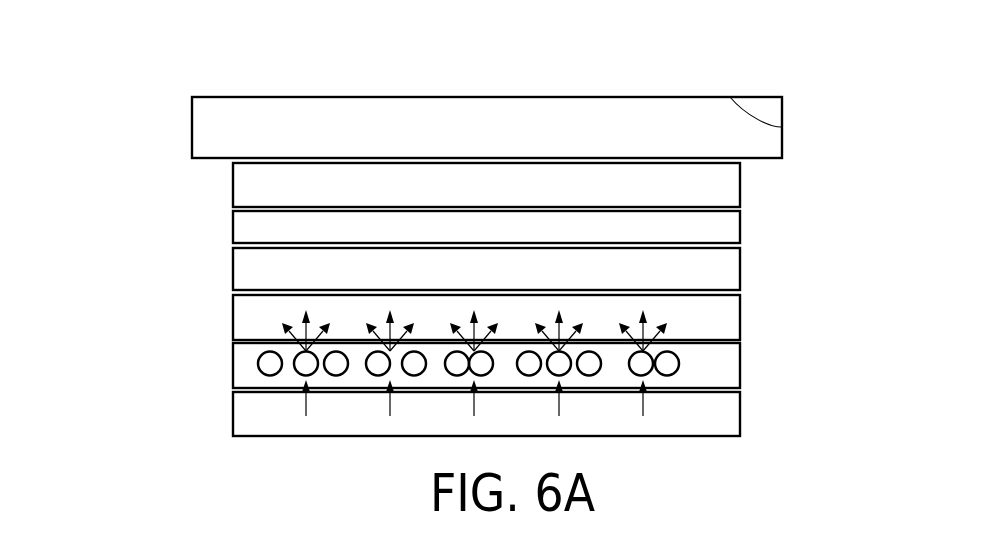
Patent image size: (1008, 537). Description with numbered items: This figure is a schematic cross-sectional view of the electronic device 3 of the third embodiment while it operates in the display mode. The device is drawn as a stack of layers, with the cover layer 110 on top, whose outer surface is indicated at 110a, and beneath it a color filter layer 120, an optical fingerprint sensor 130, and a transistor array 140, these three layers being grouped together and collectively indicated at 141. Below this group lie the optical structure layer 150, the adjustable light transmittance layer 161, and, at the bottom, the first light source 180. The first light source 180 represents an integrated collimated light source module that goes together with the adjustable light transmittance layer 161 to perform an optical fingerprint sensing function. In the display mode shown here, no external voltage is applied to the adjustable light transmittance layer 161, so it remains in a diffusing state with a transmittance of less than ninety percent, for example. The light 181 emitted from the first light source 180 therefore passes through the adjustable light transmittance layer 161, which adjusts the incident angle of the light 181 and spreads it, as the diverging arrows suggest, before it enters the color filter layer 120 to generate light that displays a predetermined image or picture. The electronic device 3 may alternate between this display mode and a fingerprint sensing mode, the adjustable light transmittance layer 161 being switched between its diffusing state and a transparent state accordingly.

The electronic device 3 is at (753, 43).
The cover layer 110 is at (207, 125).
The display surface 110a is at (783, 127).
The color filter layer 120 is at (250, 187).
The optical fingerprint sensor 130 is at (238, 220).
The transistor array 140 is at (252, 272).
The optical film stack 141 is at (388, 226).
The optical structure layer 150 is at (245, 317).
The adjustable light transmittance layer 161 is at (245, 362).
The first light source 180 is at (245, 410).
The light 181 is at (645, 347).